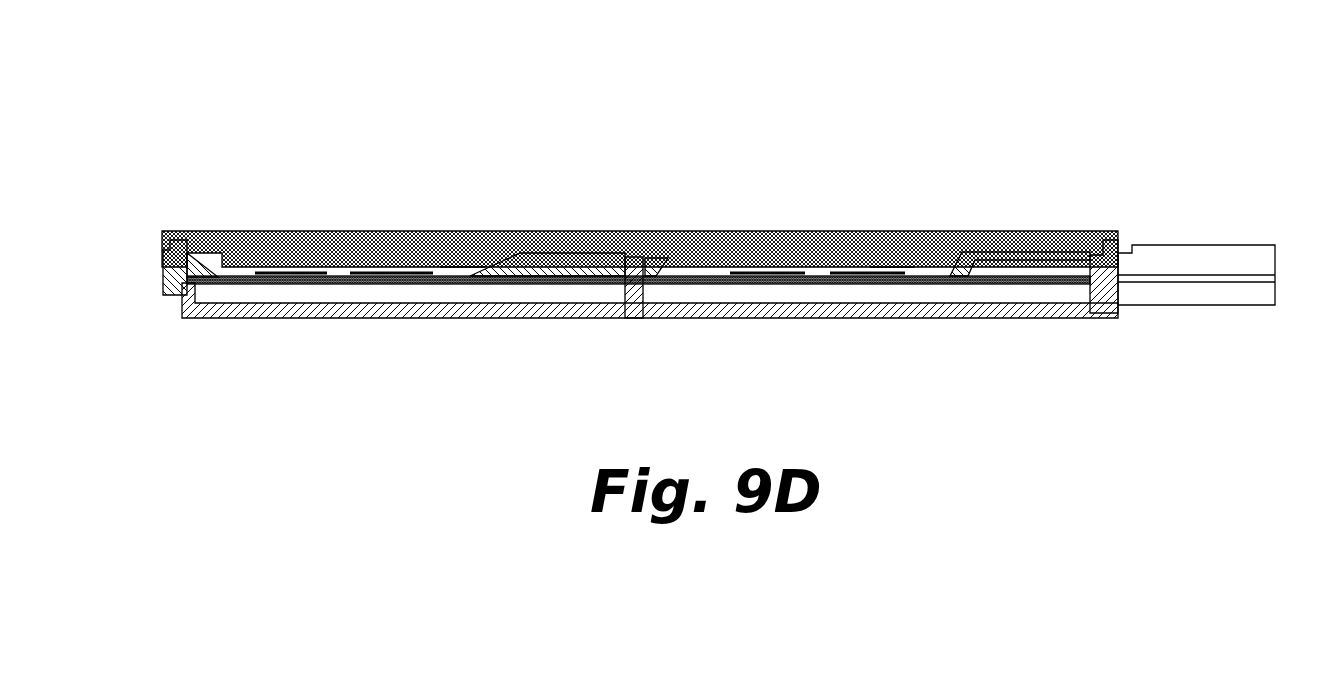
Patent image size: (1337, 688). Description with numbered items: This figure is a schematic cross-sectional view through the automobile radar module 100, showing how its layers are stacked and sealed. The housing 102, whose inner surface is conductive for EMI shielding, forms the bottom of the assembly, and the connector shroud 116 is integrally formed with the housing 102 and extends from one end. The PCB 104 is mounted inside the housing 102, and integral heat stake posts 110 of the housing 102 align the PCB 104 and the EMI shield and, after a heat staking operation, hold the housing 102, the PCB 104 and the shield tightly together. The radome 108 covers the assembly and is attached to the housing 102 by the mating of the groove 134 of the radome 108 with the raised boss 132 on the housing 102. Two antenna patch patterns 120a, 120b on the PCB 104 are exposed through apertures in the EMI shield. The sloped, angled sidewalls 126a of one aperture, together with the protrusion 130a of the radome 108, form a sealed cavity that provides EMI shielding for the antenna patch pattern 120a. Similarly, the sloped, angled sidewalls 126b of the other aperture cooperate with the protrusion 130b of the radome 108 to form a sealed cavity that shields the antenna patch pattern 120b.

The automobile radar module 100 is at (188, 126).
The housing 102 is at (182, 318).
The PCB 104 is at (312, 284).
The radome 108 is at (1108, 232).
The heat stake posts 110 is at (620, 232).
The connector shroud 116 is at (1220, 245).
The antenna patch pattern 120a is at (836, 240).
The antenna patch pattern 120b is at (372, 232).
The sloped, angled sidewalls 126a is at (672, 232).
The sloped, angled sidewalls 126b is at (220, 232).
The protrusion 130a is at (890, 232).
The protrusion 130b is at (462, 232).
The raised boss 132 is at (160, 283).
The groove 134 is at (1080, 232).